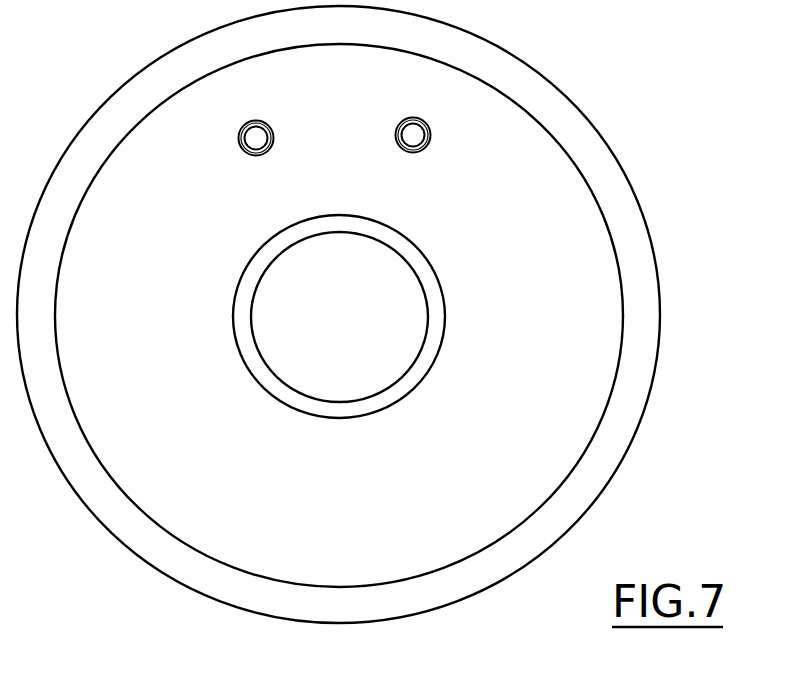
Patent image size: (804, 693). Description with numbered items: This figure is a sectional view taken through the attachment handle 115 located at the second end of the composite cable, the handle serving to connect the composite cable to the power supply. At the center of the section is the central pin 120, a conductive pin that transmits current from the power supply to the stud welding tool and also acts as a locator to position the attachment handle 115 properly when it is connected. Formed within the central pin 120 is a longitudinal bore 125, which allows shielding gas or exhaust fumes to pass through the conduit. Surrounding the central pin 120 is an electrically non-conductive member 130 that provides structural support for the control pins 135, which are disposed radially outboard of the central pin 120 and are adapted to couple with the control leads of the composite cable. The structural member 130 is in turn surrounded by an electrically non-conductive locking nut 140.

The attachment handle 115 is at (660, 315).
The central pin 120 is at (435, 302).
The longitudinal bore 125 is at (382, 267).
The electrically non-conductive member 130 is at (382, 532).
The control pins 135 is at (255, 137).
The locking nut 140 is at (573, 507).